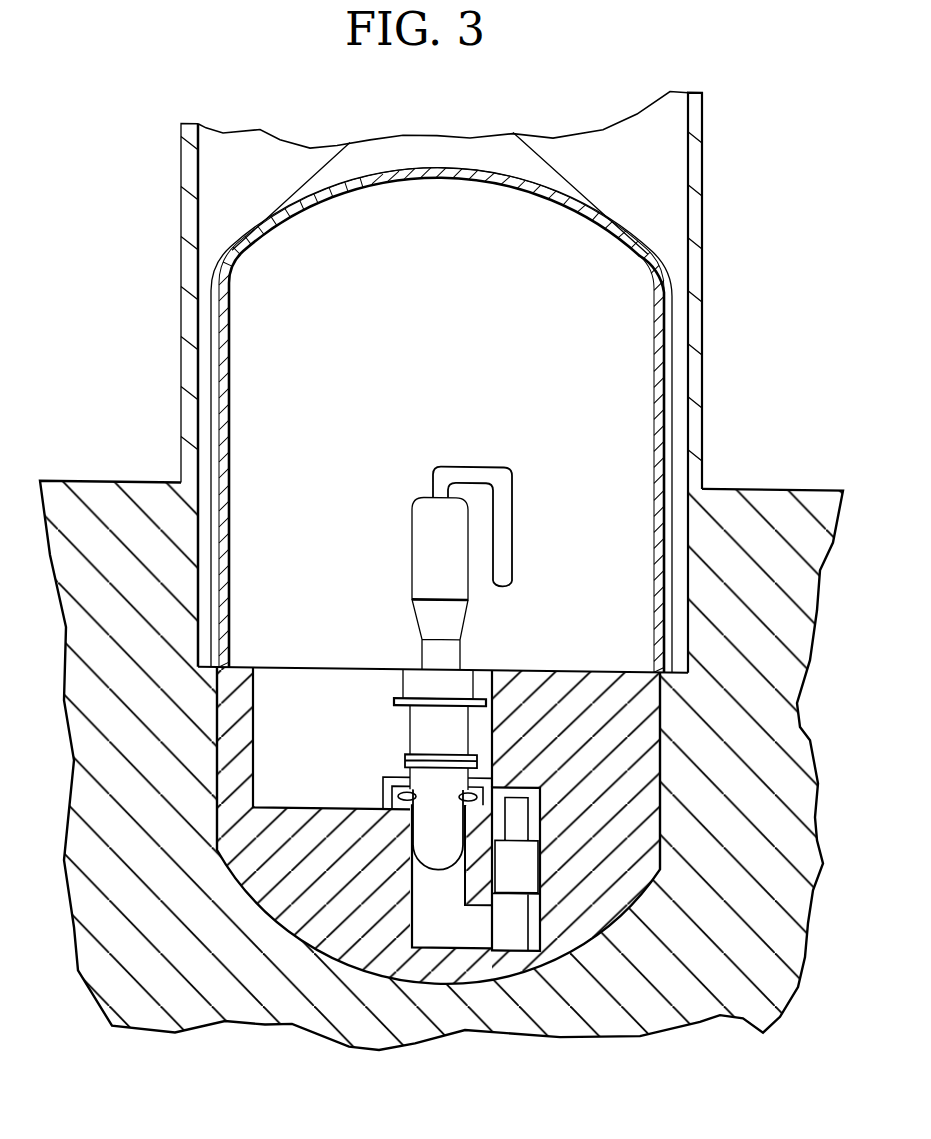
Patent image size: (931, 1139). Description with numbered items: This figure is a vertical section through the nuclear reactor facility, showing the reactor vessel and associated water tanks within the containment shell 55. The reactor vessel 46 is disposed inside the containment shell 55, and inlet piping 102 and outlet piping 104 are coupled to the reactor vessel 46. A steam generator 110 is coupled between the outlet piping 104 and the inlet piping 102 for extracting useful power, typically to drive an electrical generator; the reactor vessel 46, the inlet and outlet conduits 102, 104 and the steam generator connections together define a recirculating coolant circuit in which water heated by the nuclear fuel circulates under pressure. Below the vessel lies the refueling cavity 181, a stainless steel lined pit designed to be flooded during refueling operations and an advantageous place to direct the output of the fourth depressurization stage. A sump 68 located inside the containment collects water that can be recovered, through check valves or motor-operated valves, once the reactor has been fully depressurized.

The containment shell 55 is at (375, 190).
The steam generator 110 is at (418, 578).
The refueling cavity 181 is at (340, 776).
The outlet piping 104 is at (392, 812).
The inlet piping 102 is at (478, 803).
The reactor vessel 46 is at (430, 855).
The sump 68 is at (453, 932).